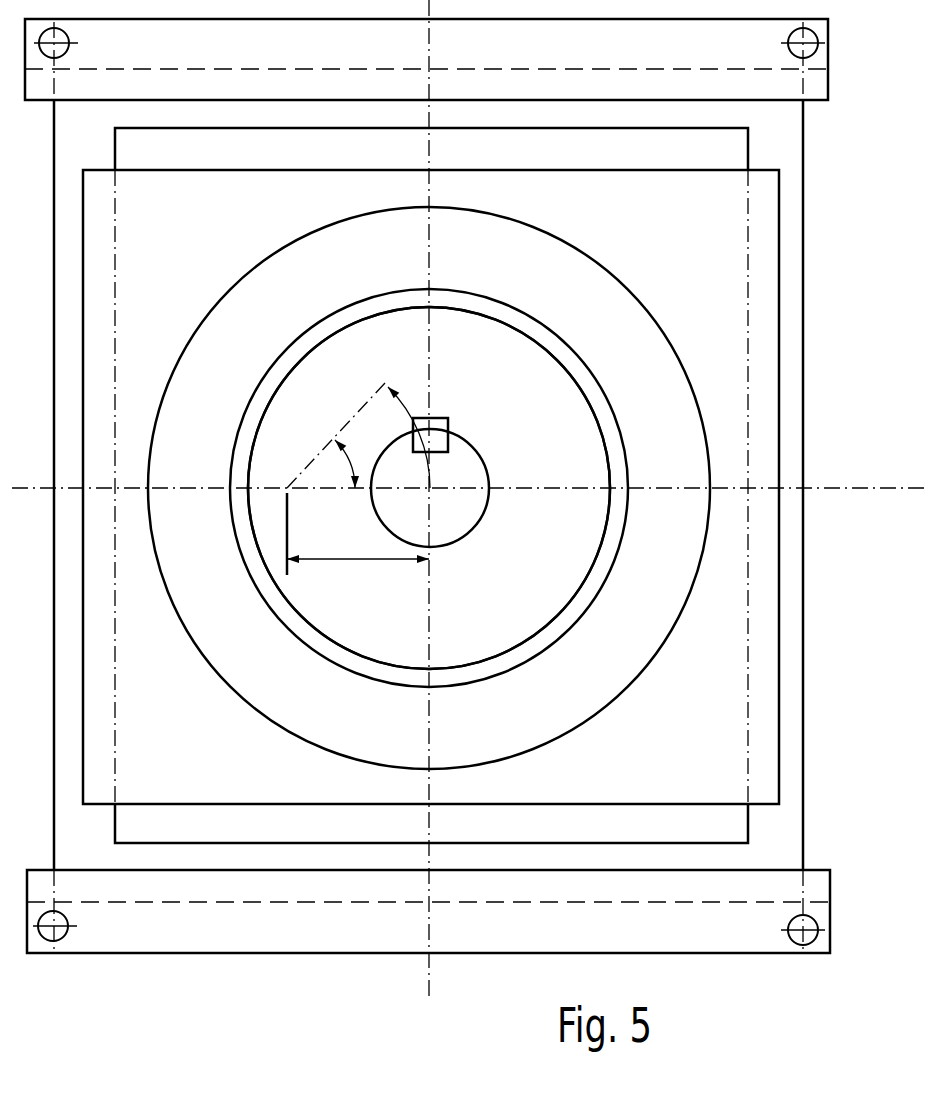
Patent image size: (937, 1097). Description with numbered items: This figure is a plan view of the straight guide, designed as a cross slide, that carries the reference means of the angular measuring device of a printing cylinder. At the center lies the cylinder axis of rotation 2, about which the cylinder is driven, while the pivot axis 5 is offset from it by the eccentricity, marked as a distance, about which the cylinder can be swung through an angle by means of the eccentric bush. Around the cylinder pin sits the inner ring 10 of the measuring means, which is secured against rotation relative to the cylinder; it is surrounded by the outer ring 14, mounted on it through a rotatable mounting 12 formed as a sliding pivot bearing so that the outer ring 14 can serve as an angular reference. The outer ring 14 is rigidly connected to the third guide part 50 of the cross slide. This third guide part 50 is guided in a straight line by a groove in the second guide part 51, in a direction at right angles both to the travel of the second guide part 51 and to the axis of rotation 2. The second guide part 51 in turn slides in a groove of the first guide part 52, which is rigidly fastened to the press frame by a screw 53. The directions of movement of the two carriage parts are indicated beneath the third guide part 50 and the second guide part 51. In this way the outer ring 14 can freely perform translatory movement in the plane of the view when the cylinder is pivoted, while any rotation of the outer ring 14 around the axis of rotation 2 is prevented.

The cylinder axis of rotation 2 is at (429, 488).
The pivot axis 5 is at (287, 488).
The inner ring 10 is at (565, 440).
The rotatable mounting 12 is at (577, 363).
The outer ring 14 is at (577, 285).
The third guide part 50 is at (213, 777).
The second guide part 51 is at (82, 837).
The first guide part 52 is at (347, 933).
The screw 53 is at (60, 933).